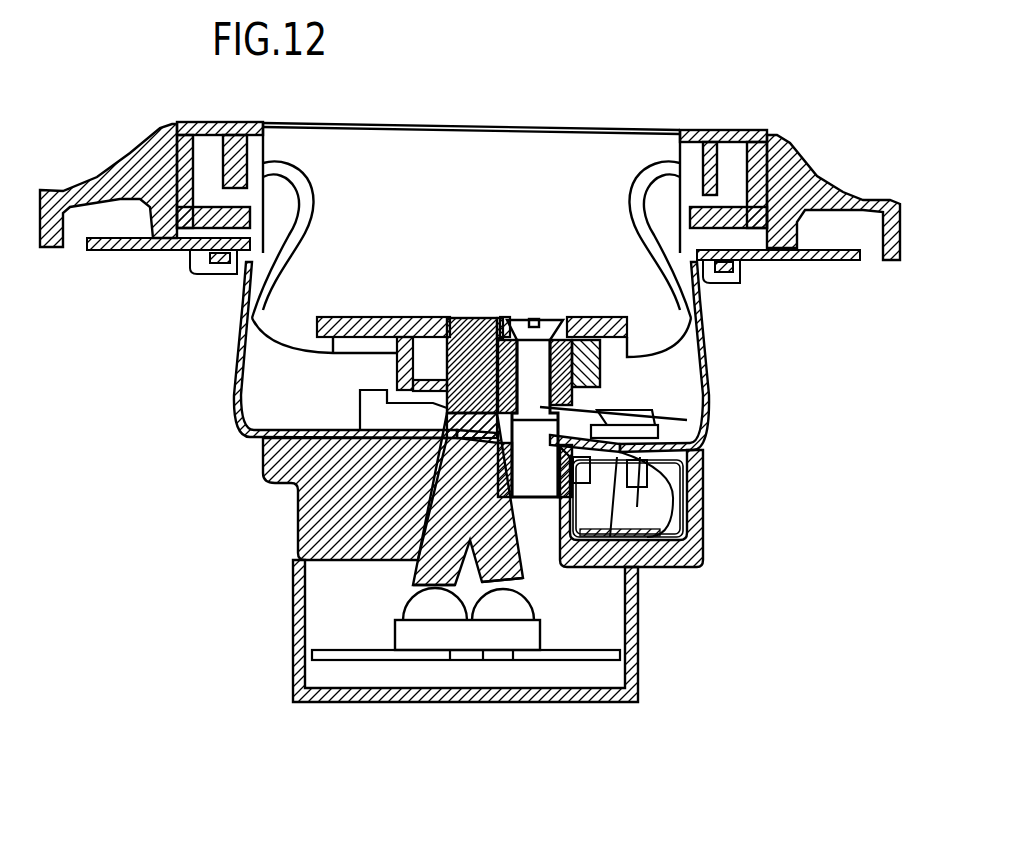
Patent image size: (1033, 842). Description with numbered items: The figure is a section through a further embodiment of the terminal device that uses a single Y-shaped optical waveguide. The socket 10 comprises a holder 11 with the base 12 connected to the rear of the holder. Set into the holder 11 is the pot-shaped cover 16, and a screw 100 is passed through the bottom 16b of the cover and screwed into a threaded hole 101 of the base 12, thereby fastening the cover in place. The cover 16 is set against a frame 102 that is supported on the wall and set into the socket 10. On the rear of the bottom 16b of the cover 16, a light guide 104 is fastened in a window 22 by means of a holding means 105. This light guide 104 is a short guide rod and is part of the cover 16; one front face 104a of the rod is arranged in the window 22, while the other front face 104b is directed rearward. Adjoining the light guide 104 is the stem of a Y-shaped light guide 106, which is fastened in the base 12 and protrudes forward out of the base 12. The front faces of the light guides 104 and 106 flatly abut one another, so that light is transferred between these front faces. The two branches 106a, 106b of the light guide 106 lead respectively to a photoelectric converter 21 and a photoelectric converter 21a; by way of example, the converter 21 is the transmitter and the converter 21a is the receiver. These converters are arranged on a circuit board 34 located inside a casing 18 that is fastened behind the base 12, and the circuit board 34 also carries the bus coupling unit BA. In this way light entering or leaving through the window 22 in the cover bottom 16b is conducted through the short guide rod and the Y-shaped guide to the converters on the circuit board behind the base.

The socket 10 is at (213, 428).
The holder 11 is at (823, 253).
The base 12 is at (310, 503).
The pot-shaped cover 16 is at (702, 132).
The bottom of the cover 16b is at (599, 318).
The casing 18 is at (633, 652).
The photoelectric converter 21 is at (430, 610).
The photoelectric converter 21a is at (502, 610).
The window 22 is at (484, 315).
The circuit board 34 is at (593, 660).
The screw 100 is at (540, 407).
The threaded hole 101 is at (590, 472).
The frame 102 is at (812, 172).
The light guide 104 is at (453, 350).
The front face of the light guide 104a is at (460, 316).
The front face of the light guide 104b is at (447, 454).
The holding means 105 is at (387, 391).
The Y-shaped light guide 106 is at (453, 480).
The branch of the light guide 106a is at (413, 572).
The branch of the light guide 106b is at (520, 576).
The bus coupling unit BA is at (582, 640).